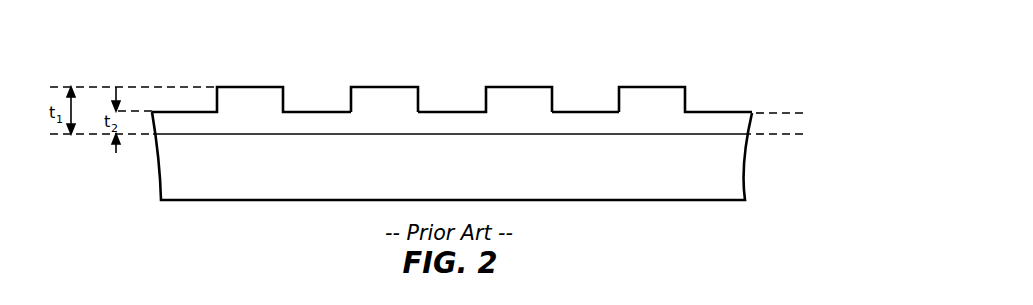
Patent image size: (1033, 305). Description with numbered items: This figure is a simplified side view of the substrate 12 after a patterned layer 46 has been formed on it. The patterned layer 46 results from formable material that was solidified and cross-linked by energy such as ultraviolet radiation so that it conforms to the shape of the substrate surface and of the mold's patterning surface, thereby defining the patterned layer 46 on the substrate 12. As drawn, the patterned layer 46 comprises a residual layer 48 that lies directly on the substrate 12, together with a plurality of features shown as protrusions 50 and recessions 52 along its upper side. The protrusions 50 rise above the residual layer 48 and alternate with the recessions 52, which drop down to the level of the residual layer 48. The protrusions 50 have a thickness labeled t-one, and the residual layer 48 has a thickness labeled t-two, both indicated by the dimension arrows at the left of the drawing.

The substrate 12 is at (745, 163).
The patterned layer 46 is at (715, 120).
The residual layer 48 is at (793, 124).
The protrusions 50 is at (386, 86).
The recessions 52 is at (589, 111).